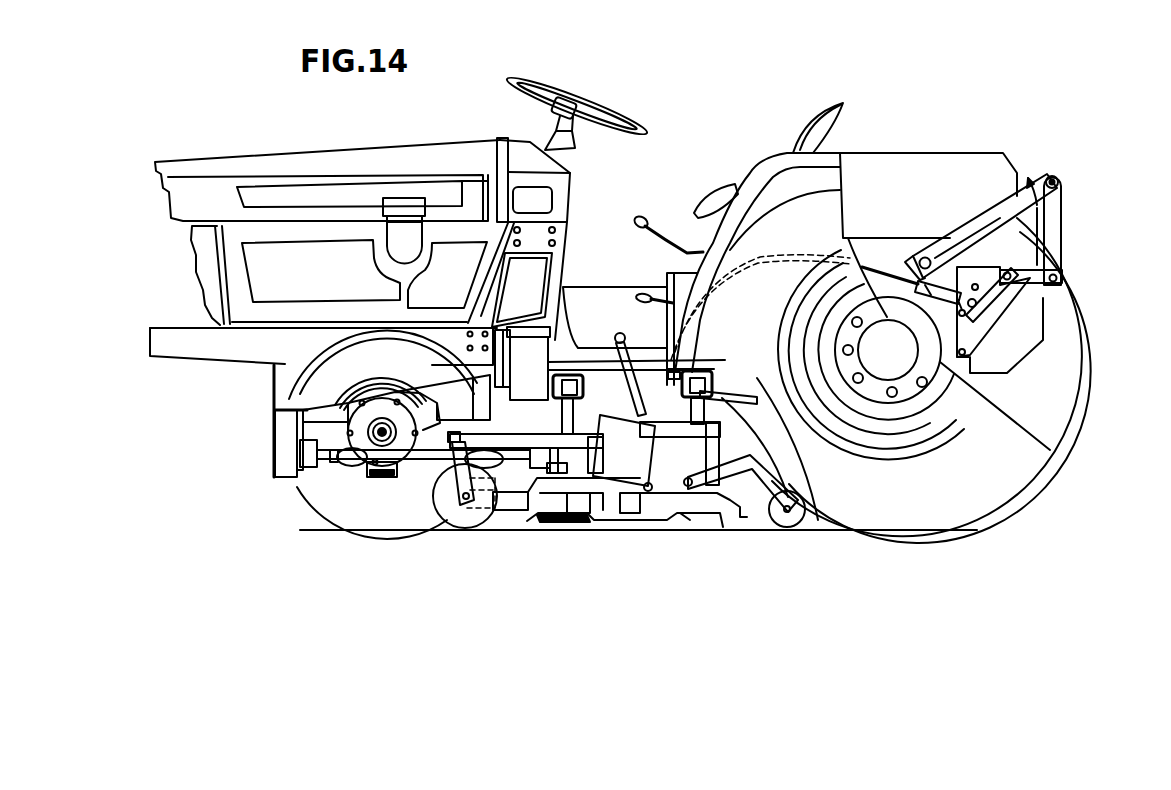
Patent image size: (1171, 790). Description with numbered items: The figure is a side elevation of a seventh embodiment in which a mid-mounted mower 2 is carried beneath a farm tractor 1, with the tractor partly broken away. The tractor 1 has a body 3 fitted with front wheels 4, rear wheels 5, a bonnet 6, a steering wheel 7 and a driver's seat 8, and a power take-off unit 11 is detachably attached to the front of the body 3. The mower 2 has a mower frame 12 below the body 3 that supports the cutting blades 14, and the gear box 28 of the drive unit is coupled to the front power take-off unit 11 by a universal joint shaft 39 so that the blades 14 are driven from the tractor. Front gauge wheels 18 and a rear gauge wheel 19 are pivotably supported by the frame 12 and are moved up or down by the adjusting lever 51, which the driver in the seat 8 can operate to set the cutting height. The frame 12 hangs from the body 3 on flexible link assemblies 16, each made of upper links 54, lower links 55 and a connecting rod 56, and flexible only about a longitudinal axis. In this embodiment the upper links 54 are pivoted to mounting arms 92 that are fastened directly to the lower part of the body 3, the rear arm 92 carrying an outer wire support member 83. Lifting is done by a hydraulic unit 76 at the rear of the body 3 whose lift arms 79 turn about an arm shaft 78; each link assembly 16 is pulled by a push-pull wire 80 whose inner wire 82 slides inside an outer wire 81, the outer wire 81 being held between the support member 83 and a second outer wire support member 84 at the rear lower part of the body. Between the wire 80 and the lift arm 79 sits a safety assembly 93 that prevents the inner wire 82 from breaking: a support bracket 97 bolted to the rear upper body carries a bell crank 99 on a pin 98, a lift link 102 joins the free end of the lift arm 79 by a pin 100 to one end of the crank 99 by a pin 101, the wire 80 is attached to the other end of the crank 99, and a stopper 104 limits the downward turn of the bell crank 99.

The farm tractor 1 is at (589, 99).
The mid-mounted mower 2 is at (665, 516).
The tractor body 3 is at (623, 305).
The front wheels 4 is at (308, 393).
The rear wheels 5 is at (1006, 456).
The bonnet 6 is at (350, 160).
The steering wheel 7 is at (613, 122).
The driver's seat 8 is at (810, 122).
The power take-off unit 11 is at (290, 472).
The mower frame 12 is at (510, 502).
The cutting blades 14 is at (550, 527).
The flexible link assemblies 16 is at (722, 423).
The front gauge wheels 18 is at (452, 520).
The rear gauge wheel 19 is at (788, 528).
The gear box 28 is at (575, 506).
The universal joint shaft 39 is at (405, 468).
The adjusting lever 51 is at (618, 332).
The upper links 54 is at (772, 394).
The lower links 55 is at (762, 456).
The connecting rod 56 is at (600, 432).
The hydraulic unit 76 is at (930, 256).
The arm shaft 78 is at (922, 257).
The lift arms 79 is at (950, 240).
The push-pull wire 80 is at (867, 264).
The outer wire 81 is at (872, 270).
The inner wire 82 is at (888, 350).
The outer wire support member 83 is at (668, 301).
The outer wire support member 84 is at (950, 300).
The mounting arms 92 is at (570, 374).
The safety assembly 93 is at (1078, 253).
The support bracket 97 is at (983, 288).
The pin 98 is at (1003, 274).
The bell crank 99 is at (1046, 292).
The pin 100 is at (1060, 180).
The pin 101 is at (1062, 284).
The lift link 102 is at (1062, 229).
The stopper 104 is at (976, 284).